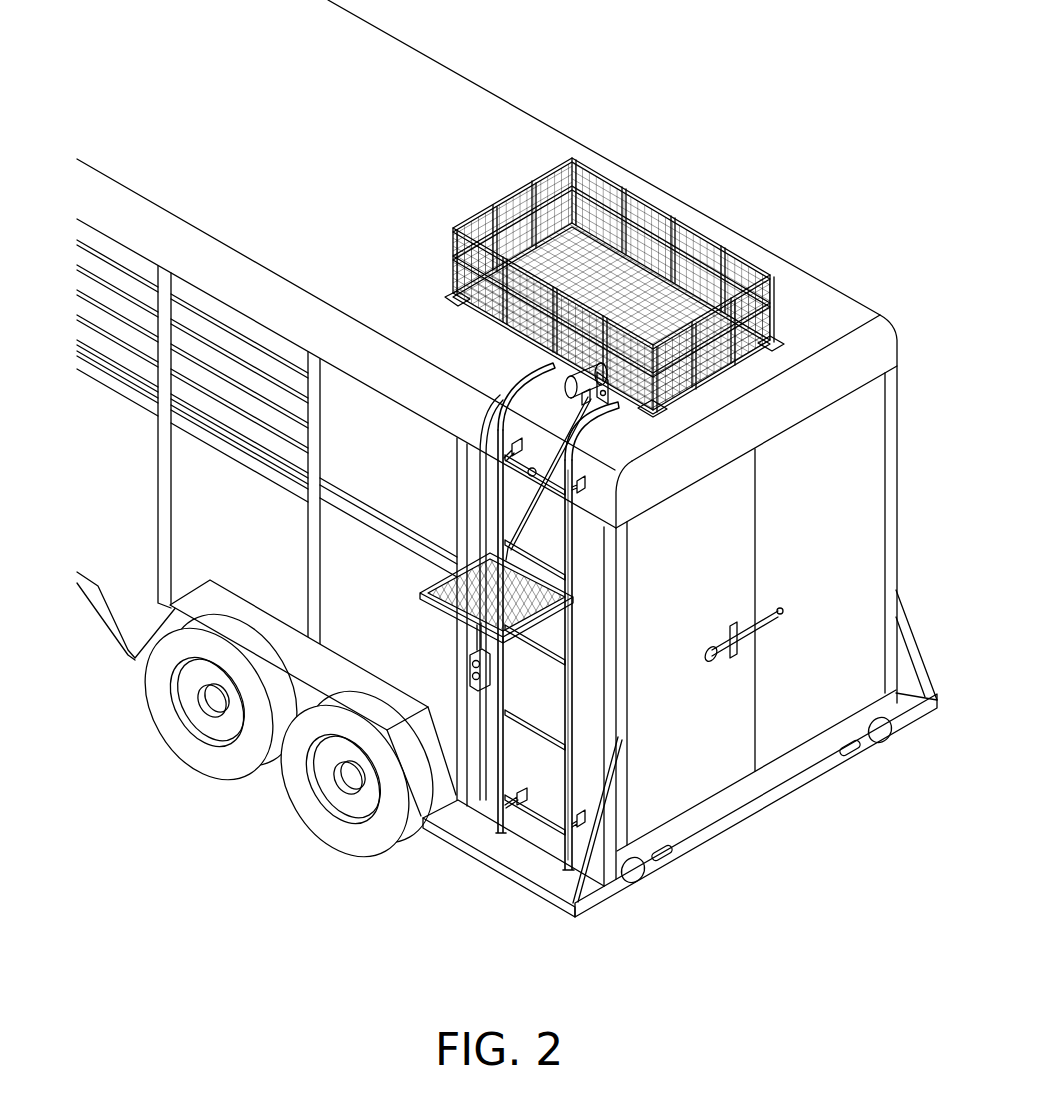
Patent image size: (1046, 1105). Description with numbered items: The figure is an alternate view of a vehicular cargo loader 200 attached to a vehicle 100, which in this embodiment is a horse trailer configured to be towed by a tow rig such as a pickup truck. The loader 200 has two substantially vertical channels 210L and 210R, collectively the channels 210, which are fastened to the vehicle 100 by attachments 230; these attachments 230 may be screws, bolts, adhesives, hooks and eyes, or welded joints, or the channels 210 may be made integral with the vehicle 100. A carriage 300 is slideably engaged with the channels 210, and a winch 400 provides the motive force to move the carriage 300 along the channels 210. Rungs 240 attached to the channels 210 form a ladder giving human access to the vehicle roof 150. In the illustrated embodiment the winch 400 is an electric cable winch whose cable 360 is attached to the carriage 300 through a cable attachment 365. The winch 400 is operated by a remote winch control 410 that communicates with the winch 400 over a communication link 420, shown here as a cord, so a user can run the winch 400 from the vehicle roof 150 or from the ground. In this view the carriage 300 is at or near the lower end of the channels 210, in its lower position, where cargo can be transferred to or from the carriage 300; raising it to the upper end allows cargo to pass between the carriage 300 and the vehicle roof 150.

The vehicle 100 is at (845, 292).
The vehicle roof 150 is at (460, 110).
The vehicular cargo loader 200 is at (528, 616).
The channel 210 is at (562, 645).
The left channel 210L is at (492, 835).
The right channel 210R is at (568, 868).
The attachment 230 is at (618, 509).
The rung 240 is at (507, 735).
The carriage 300 is at (430, 603).
The cable 360 is at (574, 441).
The cable attachment 365 is at (510, 532).
The winch 400 is at (577, 369).
The remote winch control 410 is at (470, 668).
The communication link 420 is at (487, 415).